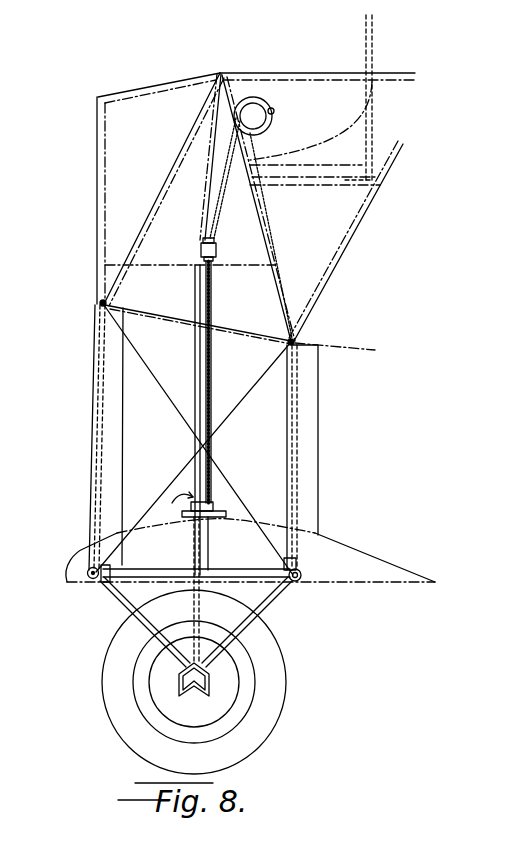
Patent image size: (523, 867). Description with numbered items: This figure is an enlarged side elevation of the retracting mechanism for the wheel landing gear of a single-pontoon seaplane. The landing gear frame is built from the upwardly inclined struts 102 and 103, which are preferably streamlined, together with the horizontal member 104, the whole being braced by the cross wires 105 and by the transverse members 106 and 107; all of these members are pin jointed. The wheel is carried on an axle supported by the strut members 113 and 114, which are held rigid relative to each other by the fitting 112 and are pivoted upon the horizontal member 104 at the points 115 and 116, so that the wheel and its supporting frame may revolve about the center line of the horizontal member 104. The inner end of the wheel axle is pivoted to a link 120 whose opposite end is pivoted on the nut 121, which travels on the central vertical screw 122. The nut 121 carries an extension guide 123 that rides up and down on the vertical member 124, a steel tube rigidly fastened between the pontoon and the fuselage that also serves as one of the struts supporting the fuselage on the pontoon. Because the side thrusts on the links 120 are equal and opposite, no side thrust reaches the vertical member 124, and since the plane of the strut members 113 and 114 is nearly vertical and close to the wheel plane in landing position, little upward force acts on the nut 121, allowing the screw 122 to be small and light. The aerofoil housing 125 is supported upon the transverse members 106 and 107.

The upwardly inclined strut 102 is at (95, 400).
The upwardly inclined strut 103 is at (296, 397).
The horizontal member 104 is at (240, 572).
The cross wires 105 is at (170, 392).
The transverse member 106 is at (92, 580).
The transverse member 107 is at (298, 583).
The fitting 112 is at (194, 689).
The strut member 113 is at (145, 627).
The strut member 114 is at (242, 625).
The pivot point 115 is at (110, 566).
The pivot point 116 is at (290, 561).
The link 120 is at (200, 604).
The nut 121 is at (212, 510).
The central vertical screw 122 is at (212, 476).
The extension guide 123 is at (174, 506).
The vertical member 124 is at (196, 352).
The aerofoil housing 125 is at (332, 549).